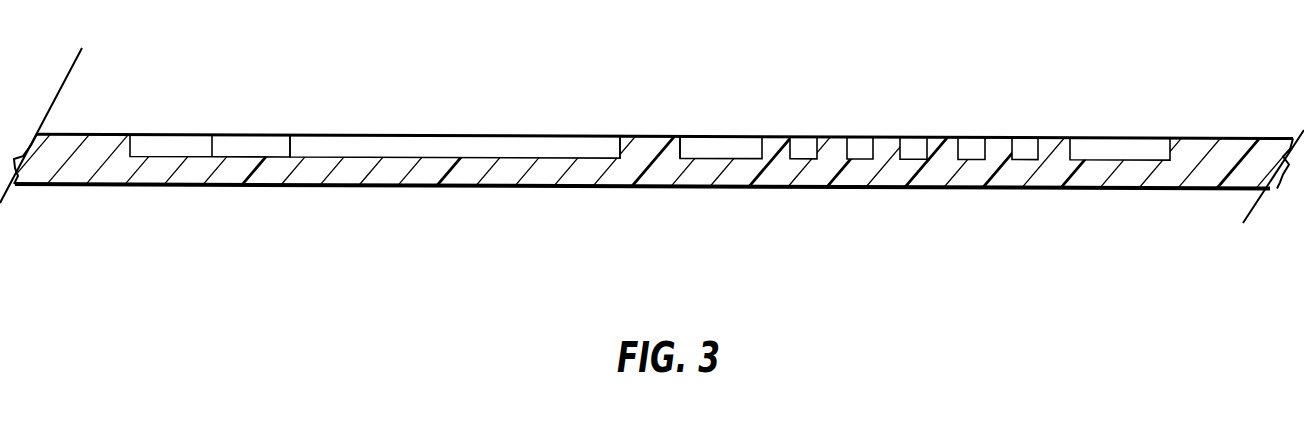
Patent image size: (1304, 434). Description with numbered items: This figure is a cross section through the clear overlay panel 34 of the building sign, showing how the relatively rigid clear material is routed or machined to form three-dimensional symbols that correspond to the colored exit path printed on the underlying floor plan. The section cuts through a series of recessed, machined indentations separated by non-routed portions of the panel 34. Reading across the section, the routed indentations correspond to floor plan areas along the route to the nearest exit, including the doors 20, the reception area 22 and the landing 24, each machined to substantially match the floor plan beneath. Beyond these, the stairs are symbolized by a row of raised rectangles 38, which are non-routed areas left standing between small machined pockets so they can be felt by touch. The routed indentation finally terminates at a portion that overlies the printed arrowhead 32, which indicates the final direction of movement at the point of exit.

The doors 20 is at (252, 148).
The reception area 22 is at (513, 160).
The landing 24 is at (728, 150).
The arrowhead 32 is at (1127, 150).
The overlay panel 34 is at (670, 109).
The raised rectangles 38 is at (783, 139).